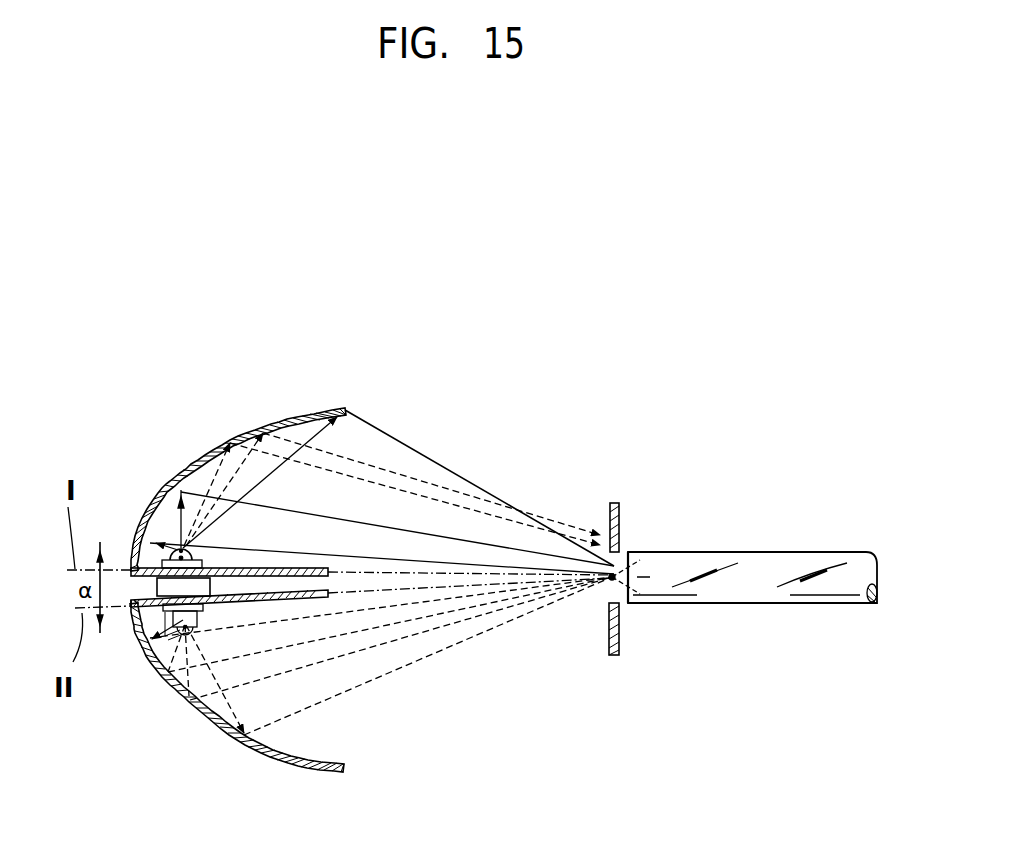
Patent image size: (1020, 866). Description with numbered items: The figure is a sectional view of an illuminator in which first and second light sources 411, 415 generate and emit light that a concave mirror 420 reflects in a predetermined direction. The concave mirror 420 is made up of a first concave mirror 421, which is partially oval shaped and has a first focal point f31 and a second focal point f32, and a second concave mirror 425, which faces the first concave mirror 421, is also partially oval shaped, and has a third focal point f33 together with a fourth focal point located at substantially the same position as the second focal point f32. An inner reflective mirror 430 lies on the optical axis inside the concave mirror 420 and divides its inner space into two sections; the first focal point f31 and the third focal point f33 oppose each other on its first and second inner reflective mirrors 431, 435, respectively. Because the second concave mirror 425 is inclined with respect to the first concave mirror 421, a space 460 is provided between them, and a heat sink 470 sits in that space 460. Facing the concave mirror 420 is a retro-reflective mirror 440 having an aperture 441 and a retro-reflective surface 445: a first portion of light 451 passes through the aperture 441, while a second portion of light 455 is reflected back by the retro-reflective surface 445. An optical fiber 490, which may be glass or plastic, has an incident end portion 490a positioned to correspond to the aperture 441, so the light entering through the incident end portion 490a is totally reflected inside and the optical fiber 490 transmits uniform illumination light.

The concave mirror 420 is at (318, 372).
The first concave mirror 421 is at (258, 418).
The second concave mirror 425 is at (286, 773).
The first light source 411 is at (185, 545).
The second light source 415 is at (205, 612).
The inner reflective mirror 430 is at (495, 694).
The first inner reflective mirror 431 is at (310, 577).
The second inner reflective mirror 435 is at (318, 597).
The heat sink 470 is at (170, 583).
The space 460 is at (131, 606).
The first portion of light 451 is at (420, 457).
The second portion of light 455 is at (448, 493).
The retro-reflective mirror 440 is at (637, 660).
The retro-reflective surface 445 is at (615, 500).
The aperture 441 is at (612, 600).
The optical fiber 490 is at (780, 605).
The incident end portion 490a is at (630, 556).
The first focal point f31 is at (172, 546).
The second focal point f32 is at (615, 582).
The third focal point f33 is at (183, 640).